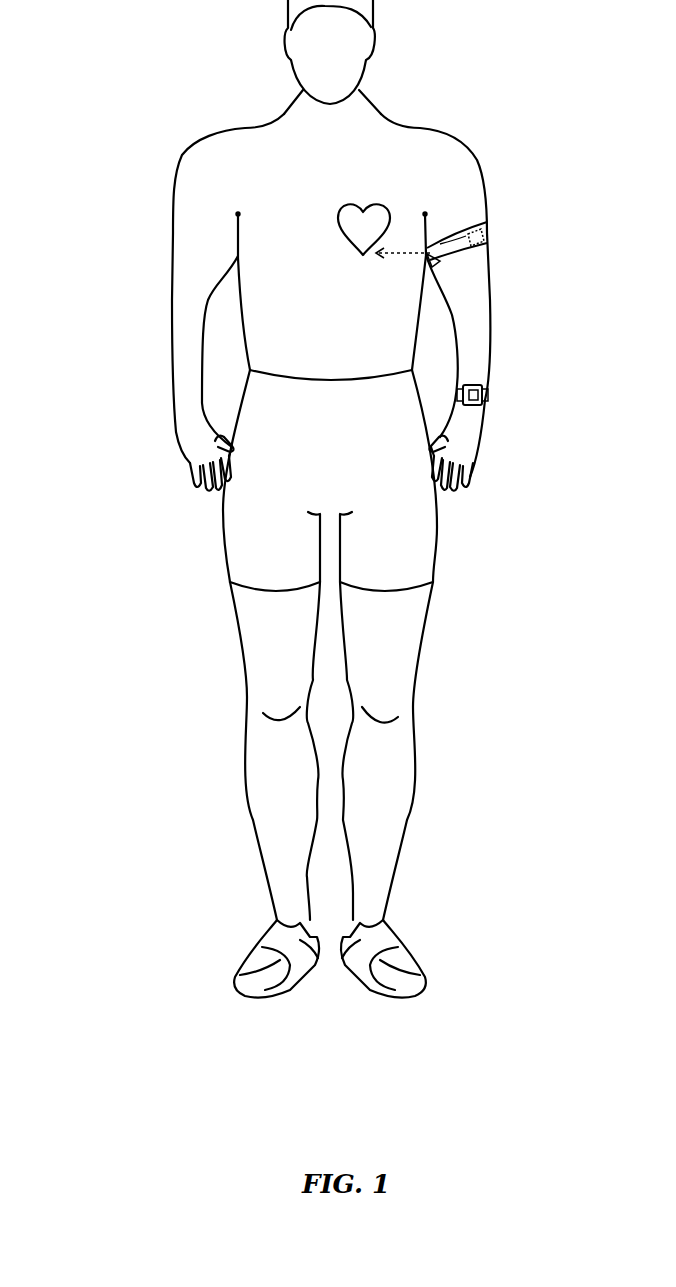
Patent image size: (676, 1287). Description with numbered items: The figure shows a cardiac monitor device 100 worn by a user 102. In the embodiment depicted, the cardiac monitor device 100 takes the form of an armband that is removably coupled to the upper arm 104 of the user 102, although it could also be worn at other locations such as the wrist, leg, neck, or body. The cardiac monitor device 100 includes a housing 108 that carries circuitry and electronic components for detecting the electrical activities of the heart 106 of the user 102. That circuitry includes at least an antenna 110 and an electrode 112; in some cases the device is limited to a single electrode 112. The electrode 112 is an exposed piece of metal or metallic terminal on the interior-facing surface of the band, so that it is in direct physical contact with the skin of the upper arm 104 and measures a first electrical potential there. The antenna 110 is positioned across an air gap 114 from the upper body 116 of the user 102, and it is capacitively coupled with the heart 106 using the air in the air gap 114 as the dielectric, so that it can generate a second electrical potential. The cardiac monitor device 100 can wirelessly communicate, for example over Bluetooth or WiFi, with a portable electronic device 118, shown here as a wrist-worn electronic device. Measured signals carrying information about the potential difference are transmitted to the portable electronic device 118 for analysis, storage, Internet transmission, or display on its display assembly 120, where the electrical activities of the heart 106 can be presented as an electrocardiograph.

The cardiac monitor device 100 is at (468, 243).
The user 102 is at (130, 572).
The upper arm 104 is at (483, 173).
The heart 106 is at (343, 240).
The housing 108 is at (447, 245).
The antenna 110 is at (433, 265).
The electrode 112 is at (487, 228).
The air gap 114 is at (402, 253).
The upper body 116 is at (418, 300).
The portable electronic device 118 is at (487, 383).
The display assembly 120 is at (485, 407).